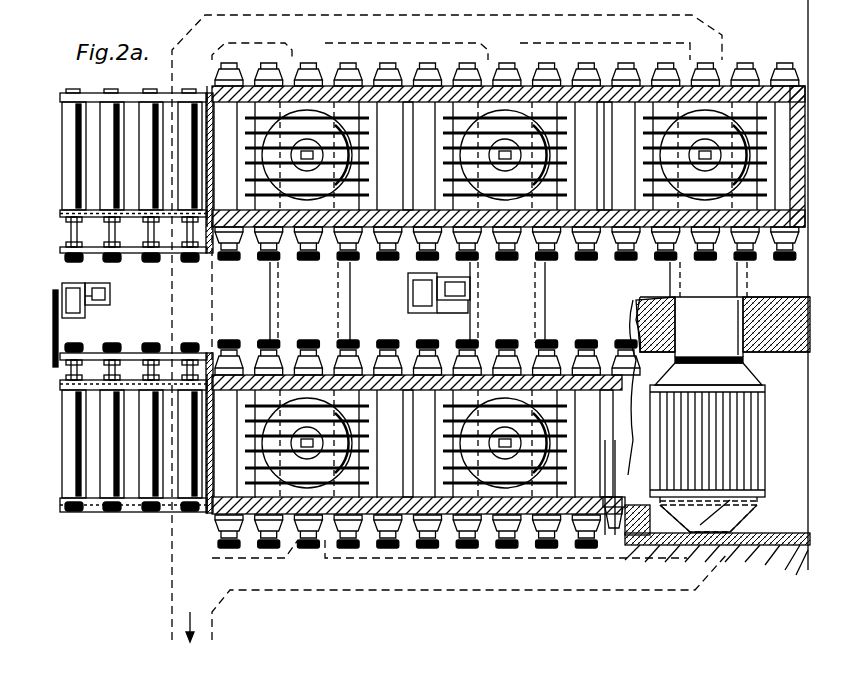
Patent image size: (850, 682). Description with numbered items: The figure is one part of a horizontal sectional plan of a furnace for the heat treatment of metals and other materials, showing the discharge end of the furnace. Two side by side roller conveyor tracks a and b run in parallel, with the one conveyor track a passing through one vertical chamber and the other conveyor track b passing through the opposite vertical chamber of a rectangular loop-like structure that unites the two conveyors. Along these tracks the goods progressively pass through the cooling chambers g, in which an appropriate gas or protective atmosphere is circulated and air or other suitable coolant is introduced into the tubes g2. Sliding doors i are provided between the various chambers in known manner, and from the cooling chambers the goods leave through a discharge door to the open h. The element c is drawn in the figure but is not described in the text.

The open h is at (118, 104).
The cooling chambers g is at (247, 108).
The sliding doors i is at (796, 134).
The grate bars c is at (523, 115).
The conveyor track a is at (634, 112).
The conveyor track b is at (586, 483).
The tubes g2 is at (740, 441).